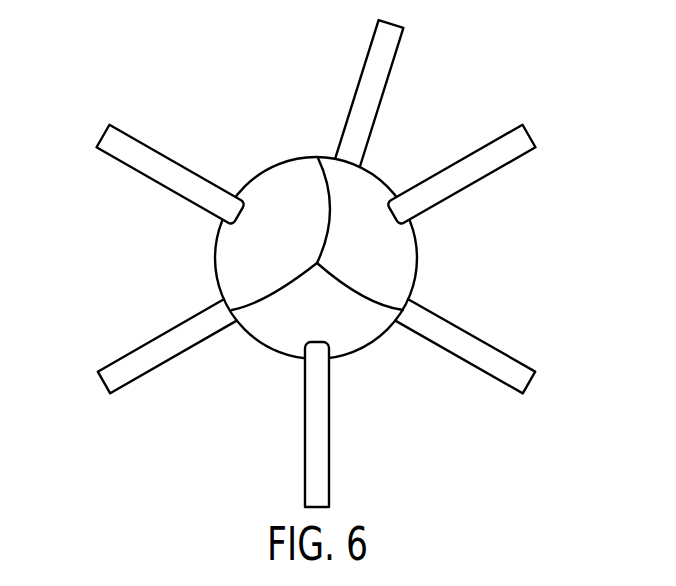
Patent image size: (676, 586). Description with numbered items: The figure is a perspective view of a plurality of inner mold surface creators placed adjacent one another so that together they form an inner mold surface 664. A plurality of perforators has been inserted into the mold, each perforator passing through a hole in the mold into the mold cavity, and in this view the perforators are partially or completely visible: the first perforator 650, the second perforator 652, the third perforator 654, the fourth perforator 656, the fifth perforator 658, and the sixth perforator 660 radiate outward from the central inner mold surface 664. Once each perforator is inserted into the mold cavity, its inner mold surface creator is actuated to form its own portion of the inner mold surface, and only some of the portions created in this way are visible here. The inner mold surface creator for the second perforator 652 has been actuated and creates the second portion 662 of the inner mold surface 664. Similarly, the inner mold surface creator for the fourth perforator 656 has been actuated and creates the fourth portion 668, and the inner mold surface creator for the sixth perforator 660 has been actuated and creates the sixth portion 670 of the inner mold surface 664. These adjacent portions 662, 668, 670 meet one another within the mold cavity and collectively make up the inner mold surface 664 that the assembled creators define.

The first perforator 650 is at (358, 80).
The second perforator 652 is at (147, 143).
The third perforator 654 is at (127, 352).
The fourth perforator 656 is at (304, 452).
The fifth perforator 658 is at (502, 348).
The sixth perforator 660 is at (497, 140).
The second portion 662 is at (230, 252).
The inner mold surface 664 is at (268, 149).
The fourth portion 668 is at (353, 335).
The sixth portion 670 is at (408, 265).